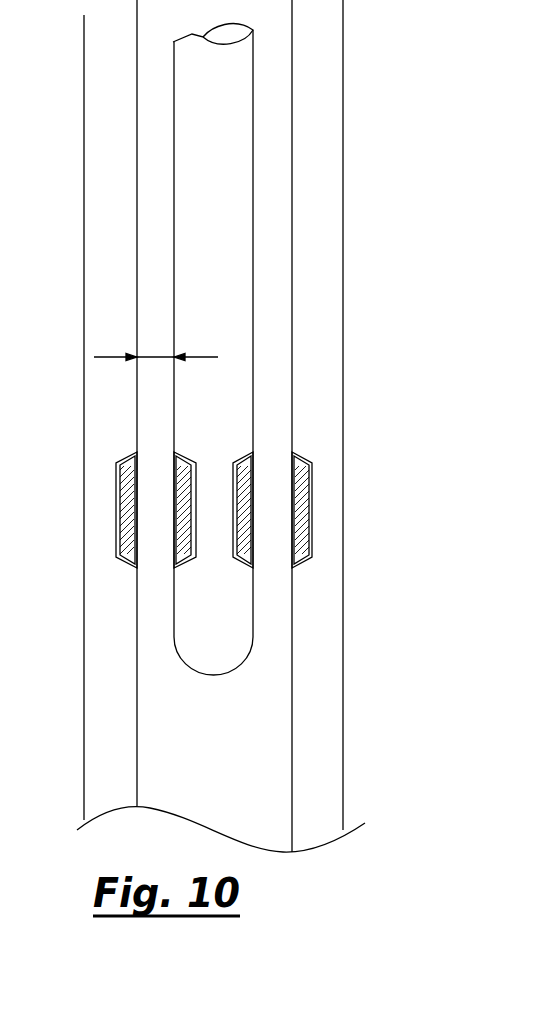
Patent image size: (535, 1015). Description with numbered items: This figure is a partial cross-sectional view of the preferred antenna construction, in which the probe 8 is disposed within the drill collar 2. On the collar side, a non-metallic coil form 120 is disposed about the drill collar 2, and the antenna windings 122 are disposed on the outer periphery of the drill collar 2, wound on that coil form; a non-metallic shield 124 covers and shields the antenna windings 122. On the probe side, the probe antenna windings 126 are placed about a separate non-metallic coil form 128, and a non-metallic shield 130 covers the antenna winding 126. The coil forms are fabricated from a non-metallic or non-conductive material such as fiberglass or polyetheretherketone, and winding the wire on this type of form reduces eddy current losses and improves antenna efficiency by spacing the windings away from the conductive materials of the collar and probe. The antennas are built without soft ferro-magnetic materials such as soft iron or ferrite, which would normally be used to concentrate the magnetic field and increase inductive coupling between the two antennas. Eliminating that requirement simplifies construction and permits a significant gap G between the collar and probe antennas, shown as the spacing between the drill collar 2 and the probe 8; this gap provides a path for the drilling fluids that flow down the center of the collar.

The drill collar 2 is at (317, 92).
The probe 8 is at (193, 90).
The gap G is at (157, 357).
The non-metallic coil form 120 is at (312, 511).
The antenna windings 122 is at (308, 538).
The non-metallic shield 124 is at (297, 455).
The probe antenna windings 126 is at (252, 556).
The non-metallic coil form 128 is at (233, 487).
The non-metallic shield 130 is at (253, 467).